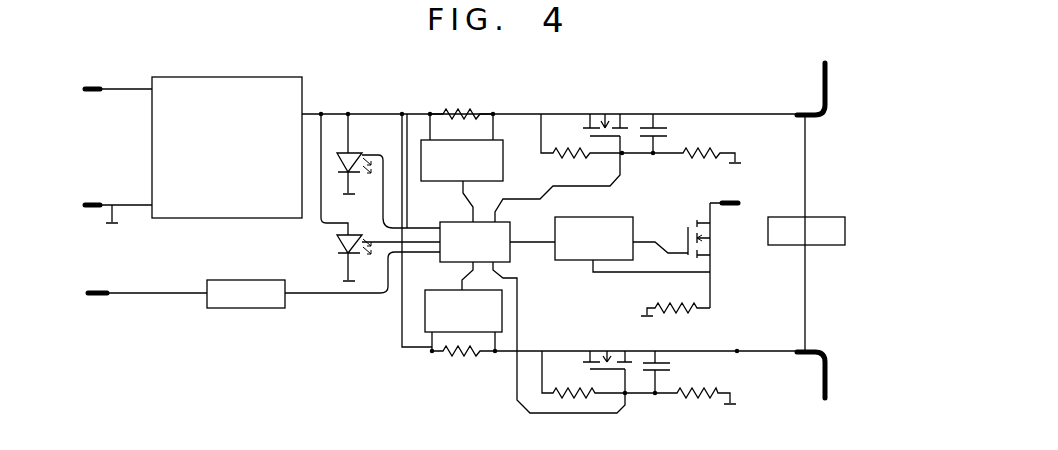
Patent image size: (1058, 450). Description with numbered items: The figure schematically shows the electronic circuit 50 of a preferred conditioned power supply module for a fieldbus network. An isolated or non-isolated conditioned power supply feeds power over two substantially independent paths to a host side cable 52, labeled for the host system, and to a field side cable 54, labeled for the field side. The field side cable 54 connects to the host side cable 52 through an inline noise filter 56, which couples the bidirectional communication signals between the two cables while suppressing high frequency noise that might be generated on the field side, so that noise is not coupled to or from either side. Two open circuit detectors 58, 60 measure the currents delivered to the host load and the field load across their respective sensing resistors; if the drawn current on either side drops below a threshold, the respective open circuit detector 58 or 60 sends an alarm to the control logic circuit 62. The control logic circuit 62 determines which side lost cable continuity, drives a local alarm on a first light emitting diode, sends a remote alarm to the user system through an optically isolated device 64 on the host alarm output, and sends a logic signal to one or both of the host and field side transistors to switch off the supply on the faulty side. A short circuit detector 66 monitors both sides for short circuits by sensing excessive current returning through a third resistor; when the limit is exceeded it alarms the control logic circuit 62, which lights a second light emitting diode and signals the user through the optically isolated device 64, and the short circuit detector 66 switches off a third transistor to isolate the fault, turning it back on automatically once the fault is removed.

The electronic circuit 50 is at (172, 362).
The host side cable 52 is at (828, 80).
The field side cable 54 is at (829, 376).
The inline noise filter 56 is at (845, 237).
The open circuit detector 58 is at (497, 163).
The open circuit detector 60 is at (425, 305).
The control logic circuit 62 is at (505, 253).
The optically isolated device 64 is at (238, 298).
The short circuit detector 66 is at (627, 222).